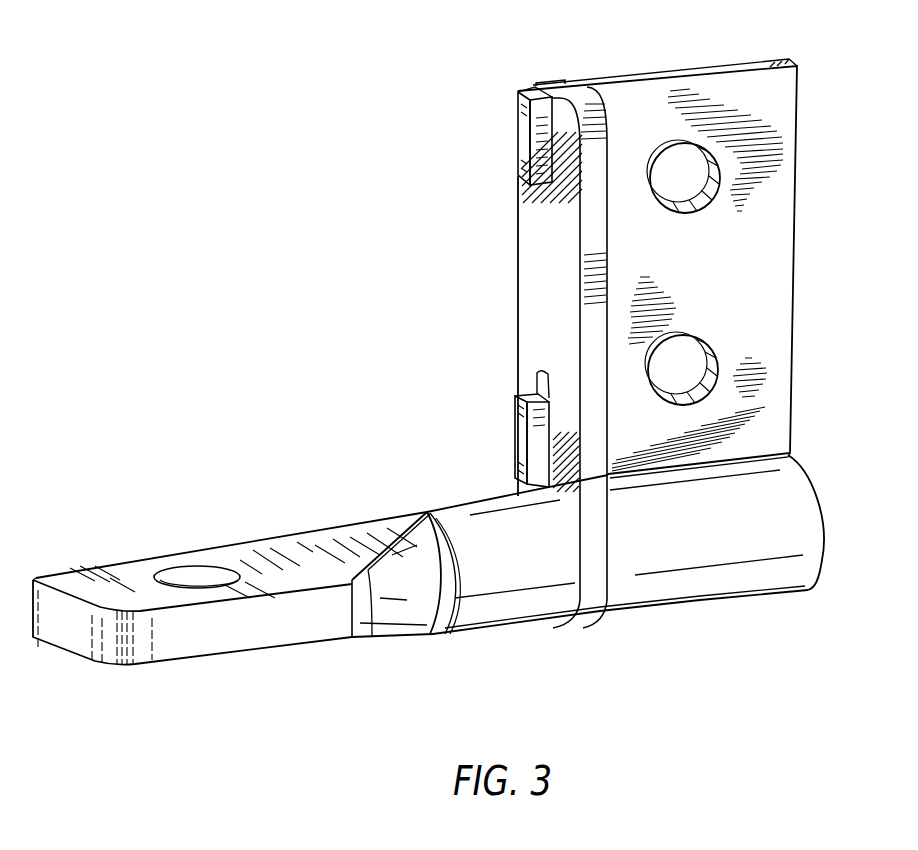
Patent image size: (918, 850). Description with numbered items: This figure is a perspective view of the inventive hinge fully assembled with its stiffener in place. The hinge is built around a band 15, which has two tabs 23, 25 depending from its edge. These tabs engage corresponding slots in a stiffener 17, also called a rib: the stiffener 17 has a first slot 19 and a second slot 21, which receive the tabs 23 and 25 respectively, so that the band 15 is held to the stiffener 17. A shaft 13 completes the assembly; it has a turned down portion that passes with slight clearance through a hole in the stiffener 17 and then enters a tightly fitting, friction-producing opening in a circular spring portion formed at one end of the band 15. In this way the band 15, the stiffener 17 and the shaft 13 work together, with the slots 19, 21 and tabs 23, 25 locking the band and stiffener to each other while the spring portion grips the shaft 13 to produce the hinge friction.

The shaft 13 is at (487, 575).
The band 15 is at (755, 88).
The stiffener 17 is at (545, 264).
The first slot 19 is at (543, 383).
The second slot 21 is at (547, 130).
The tab 23 is at (517, 430).
The tab 25 is at (515, 122).